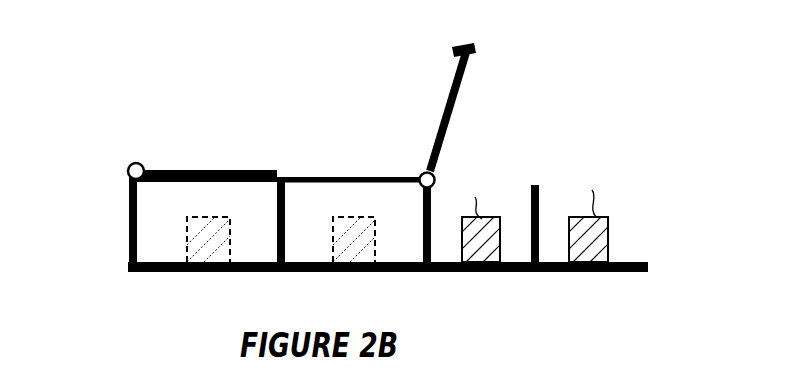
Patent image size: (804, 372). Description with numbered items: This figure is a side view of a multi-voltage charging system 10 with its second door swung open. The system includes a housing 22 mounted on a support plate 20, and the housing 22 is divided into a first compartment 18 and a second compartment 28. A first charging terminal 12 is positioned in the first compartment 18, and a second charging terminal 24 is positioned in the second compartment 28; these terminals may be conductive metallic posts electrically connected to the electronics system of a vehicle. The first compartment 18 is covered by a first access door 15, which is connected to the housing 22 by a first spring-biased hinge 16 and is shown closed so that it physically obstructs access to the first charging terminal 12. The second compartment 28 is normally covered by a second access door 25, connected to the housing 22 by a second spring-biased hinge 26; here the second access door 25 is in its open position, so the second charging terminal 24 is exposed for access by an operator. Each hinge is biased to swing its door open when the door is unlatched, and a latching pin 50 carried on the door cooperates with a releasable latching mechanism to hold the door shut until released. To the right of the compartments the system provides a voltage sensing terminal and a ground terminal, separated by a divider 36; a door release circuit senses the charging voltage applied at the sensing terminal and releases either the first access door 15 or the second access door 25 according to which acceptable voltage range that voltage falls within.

The multi-voltage charging system 10 is at (92, 199).
The first charging terminal 12 is at (192, 266).
The first access door 15 is at (217, 170).
The first spring-biased hinge 16 is at (129, 164).
The first compartment 18 is at (255, 187).
The support plate 20 is at (520, 272).
The housing 22 is at (130, 245).
The second charging terminal 24 is at (352, 262).
The second access door 25 is at (447, 95).
The second spring-biased hinge 26 is at (434, 167).
The second compartment 28 is at (312, 188).
The divider 36 is at (533, 185).
The latching pin 50 is at (452, 46).